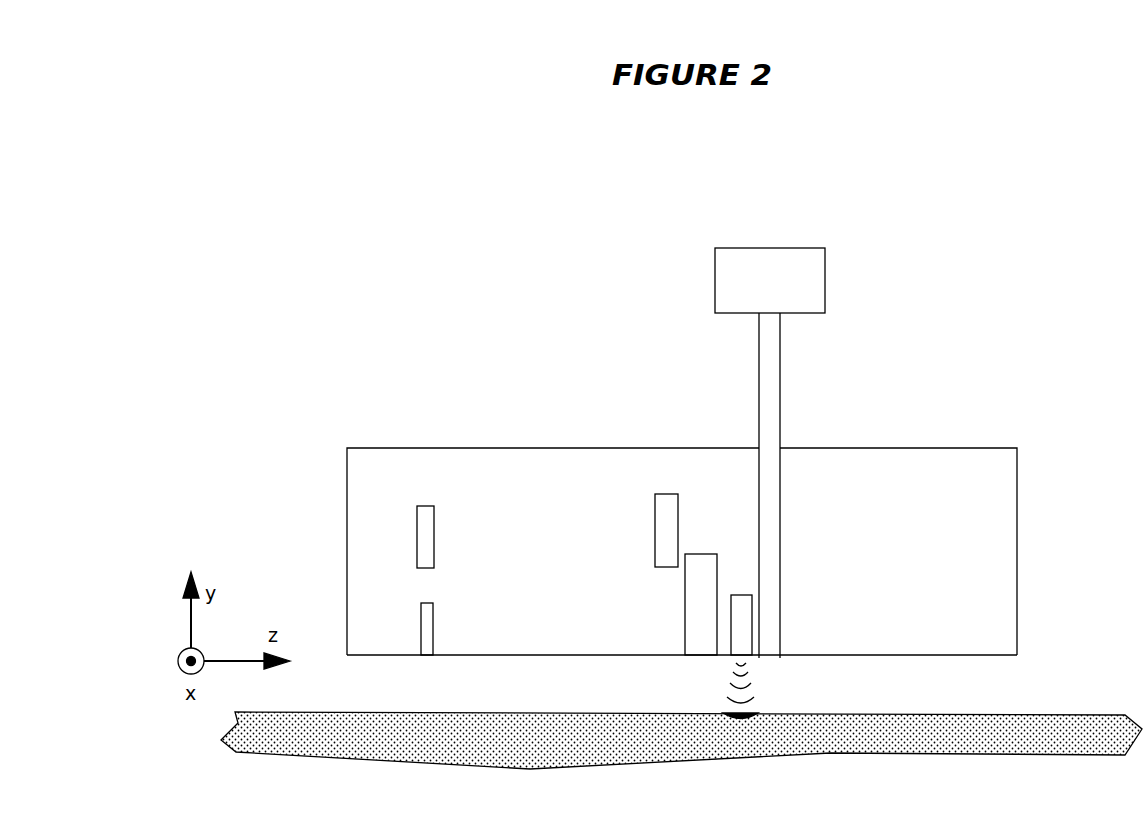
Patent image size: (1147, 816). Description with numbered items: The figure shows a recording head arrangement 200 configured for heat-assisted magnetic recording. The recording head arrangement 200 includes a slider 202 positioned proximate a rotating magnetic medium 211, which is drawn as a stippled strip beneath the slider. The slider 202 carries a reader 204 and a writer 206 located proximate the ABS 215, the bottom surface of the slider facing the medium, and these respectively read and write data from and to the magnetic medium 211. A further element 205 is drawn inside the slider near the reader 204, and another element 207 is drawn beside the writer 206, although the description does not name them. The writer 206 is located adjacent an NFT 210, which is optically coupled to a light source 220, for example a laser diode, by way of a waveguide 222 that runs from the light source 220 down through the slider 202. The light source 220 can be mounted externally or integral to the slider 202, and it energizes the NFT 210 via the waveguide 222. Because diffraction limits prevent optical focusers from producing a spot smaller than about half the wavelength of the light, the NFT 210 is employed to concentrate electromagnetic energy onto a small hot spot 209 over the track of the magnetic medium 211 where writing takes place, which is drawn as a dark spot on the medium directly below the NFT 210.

The recording head arrangement 200 is at (438, 284).
The slider 202 is at (1047, 422).
The reader 204 is at (433, 630).
The second electrode 205 is at (434, 537).
The writer 206 is at (685, 613).
The electrode 207 is at (654, 537).
The hot spot 209 is at (728, 718).
The NFT 210 is at (738, 595).
The magnetic medium 211 is at (1075, 713).
The ABS 215 is at (882, 656).
The light source 220 is at (826, 276).
The waveguide 222 is at (782, 384).